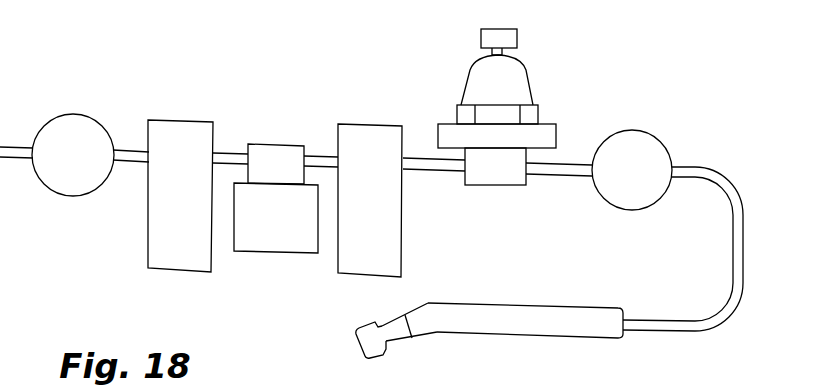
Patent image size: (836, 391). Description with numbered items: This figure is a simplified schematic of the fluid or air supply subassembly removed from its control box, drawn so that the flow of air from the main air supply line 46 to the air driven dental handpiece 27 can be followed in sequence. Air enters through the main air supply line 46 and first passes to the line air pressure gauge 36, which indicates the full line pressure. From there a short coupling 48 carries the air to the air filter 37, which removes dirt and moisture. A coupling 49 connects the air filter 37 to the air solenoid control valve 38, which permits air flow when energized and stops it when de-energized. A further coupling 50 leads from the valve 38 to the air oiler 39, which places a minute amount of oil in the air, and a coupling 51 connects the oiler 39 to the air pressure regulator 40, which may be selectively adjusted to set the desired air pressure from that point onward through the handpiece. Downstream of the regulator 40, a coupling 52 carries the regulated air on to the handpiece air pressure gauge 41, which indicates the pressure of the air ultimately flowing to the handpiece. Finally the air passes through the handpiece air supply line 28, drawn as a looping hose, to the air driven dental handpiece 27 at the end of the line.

The air driven dental handpiece 27 is at (535, 332).
The handpiece air supply line 28 is at (738, 243).
The line air pressure gauge 36 is at (63, 125).
The air filter 37 is at (175, 132).
The air solenoid control valve 38 is at (276, 155).
The air oiler 39 is at (370, 140).
The air pressure regulator 40 is at (518, 78).
The handpiece air pressure gauge 41 is at (640, 142).
The main air supply line 46 is at (19, 158).
The short coupling 48 is at (133, 161).
The coupling 49 is at (234, 156).
The coupling 50 is at (316, 160).
The coupling 51 is at (432, 170).
The coupling 52 is at (565, 175).